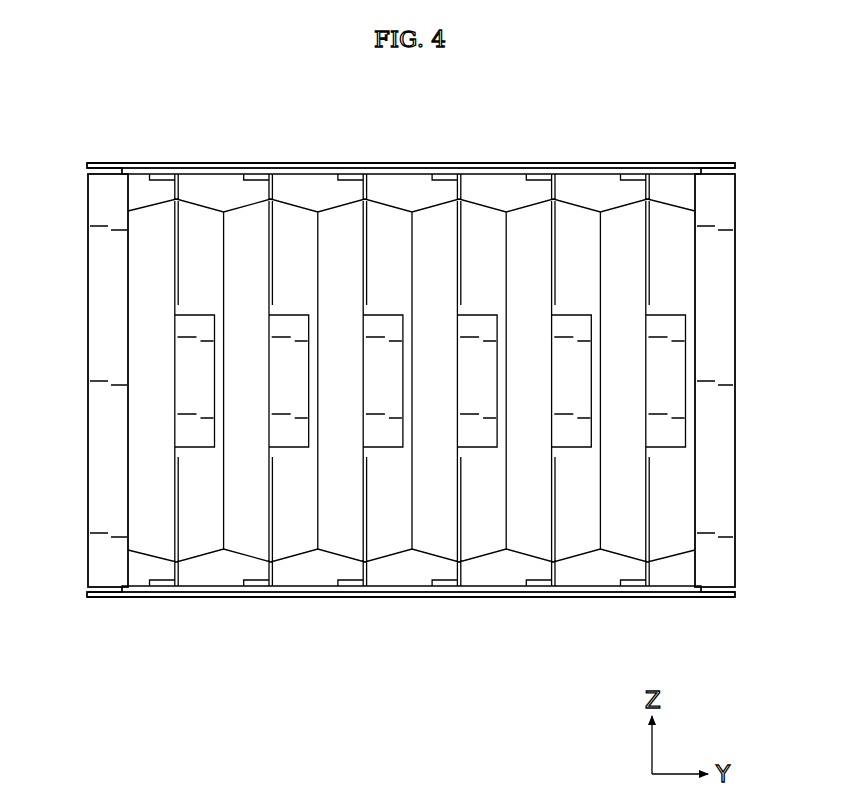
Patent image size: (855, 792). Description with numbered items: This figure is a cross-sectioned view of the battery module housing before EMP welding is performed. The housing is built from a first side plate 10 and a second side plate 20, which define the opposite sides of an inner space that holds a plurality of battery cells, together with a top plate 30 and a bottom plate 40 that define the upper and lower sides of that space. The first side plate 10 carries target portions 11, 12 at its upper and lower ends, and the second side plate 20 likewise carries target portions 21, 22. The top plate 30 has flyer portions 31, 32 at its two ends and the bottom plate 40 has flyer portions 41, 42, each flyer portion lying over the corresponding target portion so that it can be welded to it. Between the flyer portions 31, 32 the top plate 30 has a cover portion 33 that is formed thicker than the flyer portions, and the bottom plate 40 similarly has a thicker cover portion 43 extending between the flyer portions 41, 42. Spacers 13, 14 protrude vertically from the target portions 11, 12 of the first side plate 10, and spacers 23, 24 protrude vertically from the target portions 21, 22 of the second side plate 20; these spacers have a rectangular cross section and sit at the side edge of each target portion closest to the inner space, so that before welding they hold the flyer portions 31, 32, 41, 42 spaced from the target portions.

The first side plate 10 is at (745, 321).
The target portion 11 is at (728, 173).
The target portion 12 is at (727, 587).
The spacer 13 is at (698, 172).
The spacer 14 is at (697, 593).
The second side plate 20 is at (82, 321).
The target portion 21 is at (98, 173).
The target portion 22 is at (97, 586).
The spacer 23 is at (124, 172).
The spacer 24 is at (127, 593).
The top plate 30 is at (556, 148).
The flyer portion 31 is at (721, 96).
The flyer portion 32 is at (102, 96).
The cover portion 33 is at (325, 162).
The bottom plate 40 is at (562, 616).
The flyer portion 41 is at (718, 598).
The flyer portion 42 is at (105, 599).
The cover portion 43 is at (325, 598).